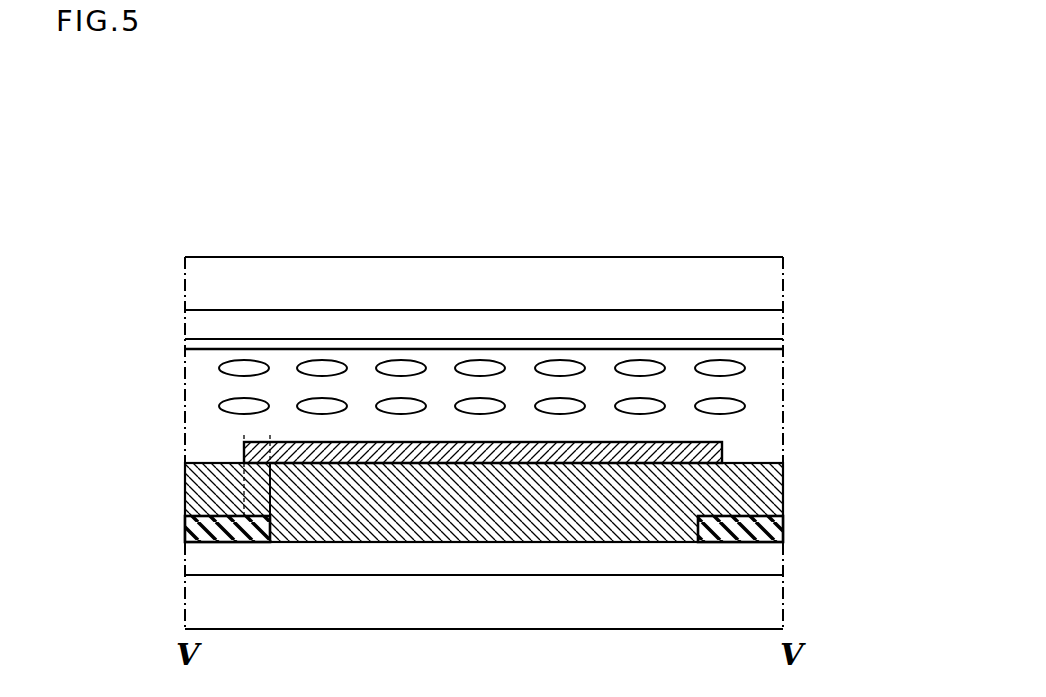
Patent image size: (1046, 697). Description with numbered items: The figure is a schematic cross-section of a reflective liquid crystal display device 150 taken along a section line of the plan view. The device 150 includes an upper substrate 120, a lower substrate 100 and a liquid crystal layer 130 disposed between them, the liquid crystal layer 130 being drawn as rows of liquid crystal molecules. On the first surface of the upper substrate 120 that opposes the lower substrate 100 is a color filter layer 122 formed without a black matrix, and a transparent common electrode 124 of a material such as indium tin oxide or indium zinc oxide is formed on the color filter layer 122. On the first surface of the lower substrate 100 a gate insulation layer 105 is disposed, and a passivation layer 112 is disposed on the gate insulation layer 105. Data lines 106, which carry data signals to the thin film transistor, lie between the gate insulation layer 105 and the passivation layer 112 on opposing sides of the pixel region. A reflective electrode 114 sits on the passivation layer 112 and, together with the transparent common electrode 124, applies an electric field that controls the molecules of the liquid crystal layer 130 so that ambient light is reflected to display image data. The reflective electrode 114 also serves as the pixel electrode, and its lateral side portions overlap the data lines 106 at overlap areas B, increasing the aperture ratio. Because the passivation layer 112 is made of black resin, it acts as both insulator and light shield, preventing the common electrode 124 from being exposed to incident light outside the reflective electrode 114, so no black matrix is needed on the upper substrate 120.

The liquid crystal display device 150 is at (668, 228).
The upper substrate 120 is at (484, 283).
The color filter layer 122 is at (752, 325).
The transparent common electrode 124 is at (775, 349).
The liquid crystal layer 130 is at (174, 352).
The reflective electrode 114 is at (722, 455).
The passivation layer 112 is at (740, 505).
The data lines 106 is at (187, 525).
The gate insulation layer 105 is at (777, 557).
The lower substrate 100 is at (484, 609).
The overlap areas B is at (305, 435).